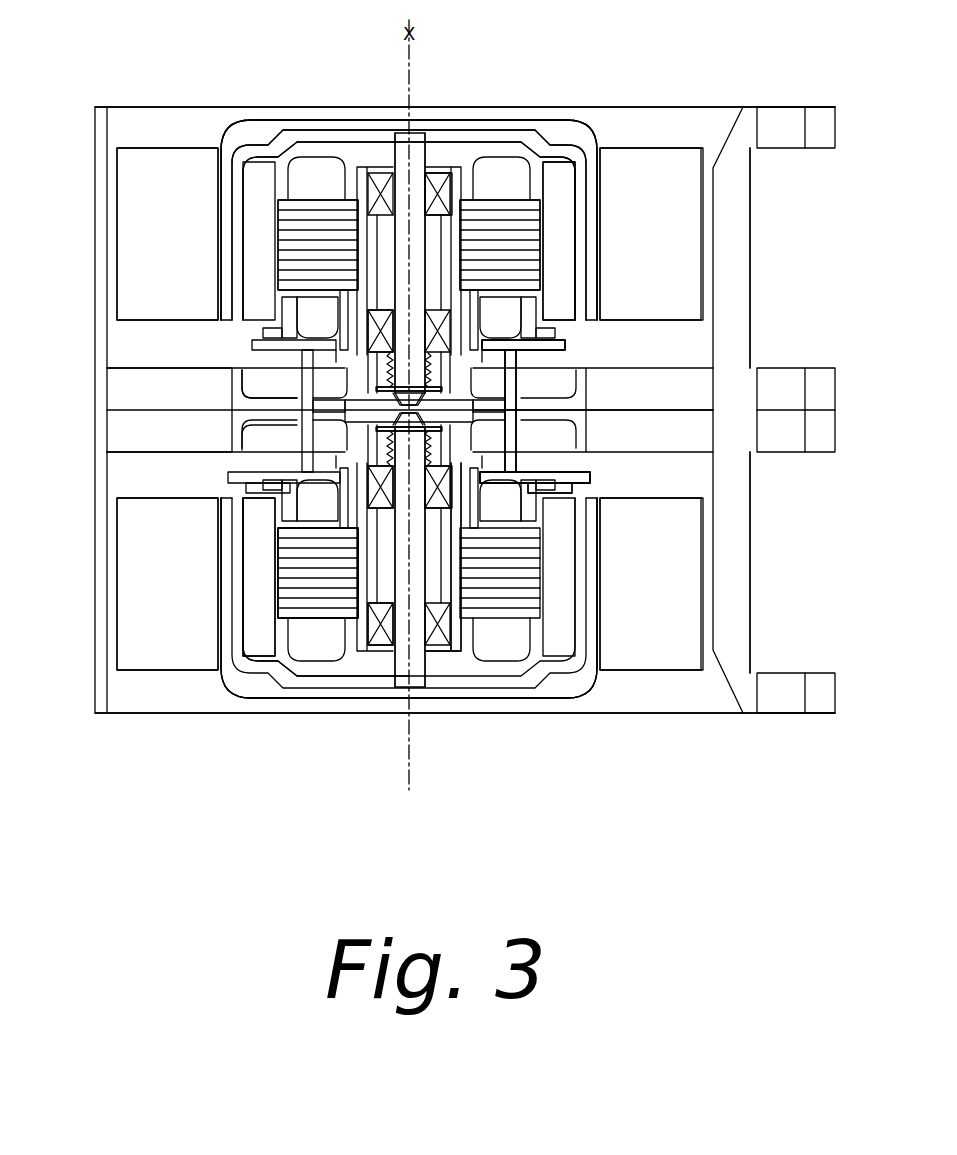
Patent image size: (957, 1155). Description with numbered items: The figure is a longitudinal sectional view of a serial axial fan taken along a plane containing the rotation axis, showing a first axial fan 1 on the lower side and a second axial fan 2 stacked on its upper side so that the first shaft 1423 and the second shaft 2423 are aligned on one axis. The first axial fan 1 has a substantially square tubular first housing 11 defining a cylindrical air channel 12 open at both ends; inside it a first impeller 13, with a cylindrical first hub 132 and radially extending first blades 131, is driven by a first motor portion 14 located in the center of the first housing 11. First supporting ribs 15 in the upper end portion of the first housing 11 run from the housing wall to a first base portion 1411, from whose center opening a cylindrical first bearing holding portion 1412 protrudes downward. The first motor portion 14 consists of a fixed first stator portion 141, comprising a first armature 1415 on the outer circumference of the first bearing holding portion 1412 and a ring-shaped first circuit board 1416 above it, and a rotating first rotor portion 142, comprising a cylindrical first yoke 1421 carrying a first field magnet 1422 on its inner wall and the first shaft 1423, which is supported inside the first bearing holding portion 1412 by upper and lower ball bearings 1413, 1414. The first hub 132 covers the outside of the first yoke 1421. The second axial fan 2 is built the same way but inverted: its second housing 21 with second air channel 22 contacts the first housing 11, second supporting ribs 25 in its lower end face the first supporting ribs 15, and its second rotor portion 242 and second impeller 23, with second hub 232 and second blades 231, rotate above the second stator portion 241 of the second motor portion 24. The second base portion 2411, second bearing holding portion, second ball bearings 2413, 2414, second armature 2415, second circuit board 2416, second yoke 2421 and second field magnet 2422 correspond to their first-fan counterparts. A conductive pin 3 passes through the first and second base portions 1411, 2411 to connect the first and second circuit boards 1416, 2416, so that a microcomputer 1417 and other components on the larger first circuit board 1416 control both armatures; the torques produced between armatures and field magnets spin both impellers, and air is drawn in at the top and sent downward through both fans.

The first axial fan 1 is at (698, 800).
The second axial fan 2 is at (683, 72).
The conductive pin 3 is at (308, 382).
The first housing 11 is at (752, 538).
The air channel 12 is at (170, 485).
The first impeller 13 is at (195, 682).
The first motor portion 14 is at (532, 718).
The first supporting ribs 15 is at (128, 436).
The second housing 21 is at (752, 331).
The second air channel 22 is at (170, 355).
The second impeller 23 is at (182, 130).
The second motor portion 24 is at (530, 107).
The second supporting ribs 25 is at (123, 378).
The first blades 131 is at (660, 658).
The first hub 132 is at (455, 690).
The first stator portion 141 is at (262, 572).
The first rotor portion 142 is at (590, 667).
The second blades 231 is at (658, 160).
The second hub 232 is at (265, 130).
The second stator portion 241 is at (255, 253).
The second rotor portion 242 is at (558, 140).
The first base portion 1411 is at (553, 440).
The first bearing holding portion 1412 is at (458, 497).
The ball bearing 1413 is at (350, 512).
The ball bearing 1414 is at (380, 643).
The first armature 1415 is at (300, 603).
The first circuit board 1416 is at (562, 488).
The microcomputer 1417 is at (578, 483).
The first yoke 1421 is at (323, 678).
The first field magnet 1422 is at (253, 647).
The first shaft 1423 is at (415, 680).
The second base portion 2411 is at (530, 398).
The second ball bearing 2413 is at (385, 330).
The second ball bearing 2414 is at (440, 182).
The second armature 2415 is at (530, 232).
The second circuit board 2416 is at (548, 325).
The second yoke 2421 is at (330, 142).
The second field magnet 2422 is at (565, 272).
The second shaft 2423 is at (402, 143).